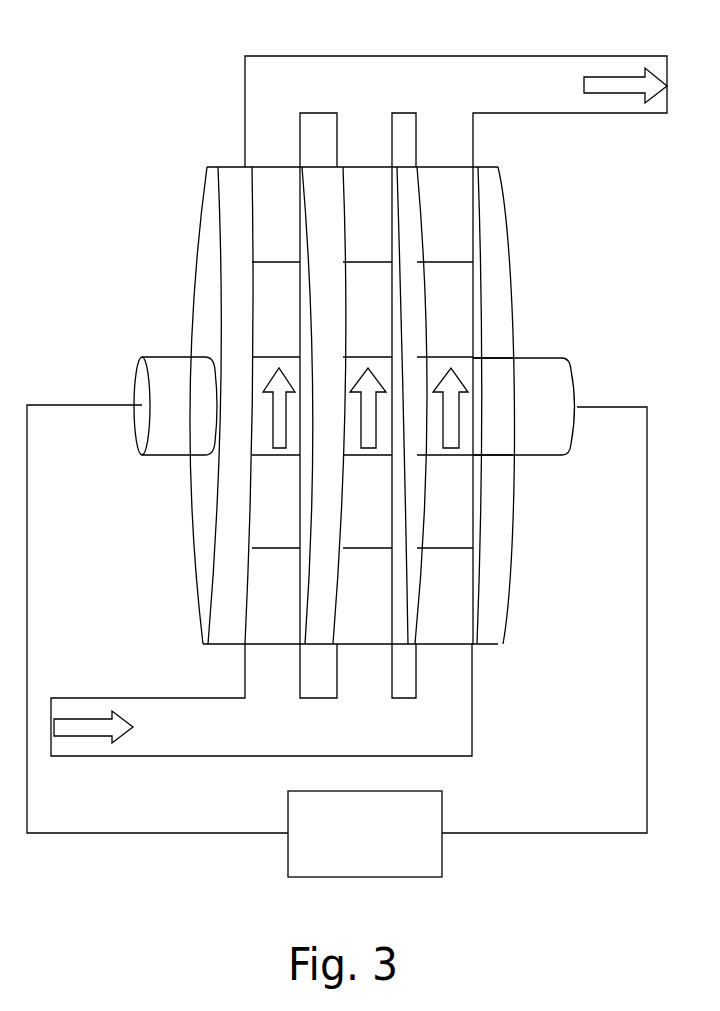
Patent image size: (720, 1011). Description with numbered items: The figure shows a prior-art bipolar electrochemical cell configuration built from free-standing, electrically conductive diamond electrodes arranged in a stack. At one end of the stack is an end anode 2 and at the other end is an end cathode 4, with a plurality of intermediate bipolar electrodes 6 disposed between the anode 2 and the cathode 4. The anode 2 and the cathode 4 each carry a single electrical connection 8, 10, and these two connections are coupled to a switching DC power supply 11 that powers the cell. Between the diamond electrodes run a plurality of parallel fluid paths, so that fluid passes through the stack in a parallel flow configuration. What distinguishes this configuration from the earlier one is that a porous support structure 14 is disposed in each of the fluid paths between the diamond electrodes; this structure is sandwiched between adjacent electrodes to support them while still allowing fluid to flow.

The end anode 2 is at (232, 177).
The end cathode 4 is at (492, 187).
The intermediate bipolar electrodes 6 is at (322, 178).
The electrical connection 8 is at (168, 360).
The electrical connection 10 is at (560, 380).
The switching DC power supply 11 is at (422, 877).
The porous support structure 14 is at (277, 645).